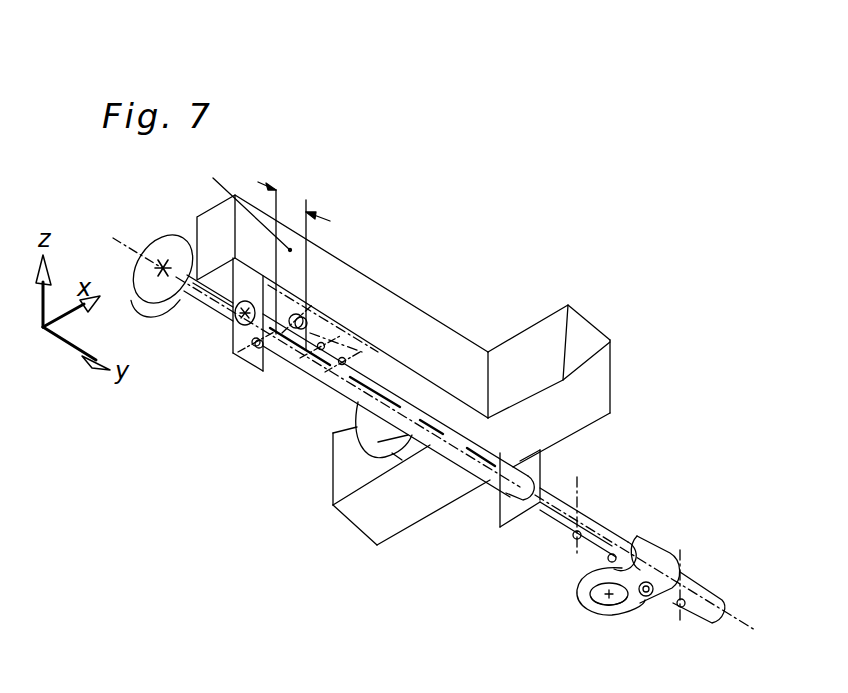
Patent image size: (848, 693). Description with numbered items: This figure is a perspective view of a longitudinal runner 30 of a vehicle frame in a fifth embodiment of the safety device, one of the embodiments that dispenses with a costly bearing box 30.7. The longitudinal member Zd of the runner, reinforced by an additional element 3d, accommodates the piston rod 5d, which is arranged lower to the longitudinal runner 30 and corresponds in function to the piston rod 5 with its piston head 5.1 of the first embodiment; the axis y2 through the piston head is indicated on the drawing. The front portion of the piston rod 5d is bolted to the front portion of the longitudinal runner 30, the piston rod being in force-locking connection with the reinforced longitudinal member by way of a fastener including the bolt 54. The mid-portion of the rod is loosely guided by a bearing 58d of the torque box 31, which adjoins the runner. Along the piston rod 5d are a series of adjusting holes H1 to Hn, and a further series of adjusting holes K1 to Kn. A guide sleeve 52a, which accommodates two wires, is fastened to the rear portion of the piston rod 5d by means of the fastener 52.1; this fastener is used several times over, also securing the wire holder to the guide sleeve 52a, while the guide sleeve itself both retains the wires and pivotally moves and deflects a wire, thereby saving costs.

The piston head 5.1 is at (175, 253).
The axis y2 is at (137, 238).
The piston rod 5 is at (326, 387).
The longitudinal runner 30 is at (342, 301).
The additional element 3d is at (236, 178).
The longitudinal member Zd is at (294, 258).
The adjusting hole H1 is at (235, 344).
The adjusting hole Hn is at (300, 360).
The bolt 54 is at (362, 283).
The torque box 31 is at (572, 375).
The bearing box 30.7 is at (362, 473).
The bearing 58d is at (485, 517).
The piston rod 5d is at (645, 525).
The adjusting hole Kn is at (584, 507).
The adjusting hole K1 is at (692, 573).
The guide sleeve 52a is at (678, 543).
The fastener 52.1 is at (619, 612).